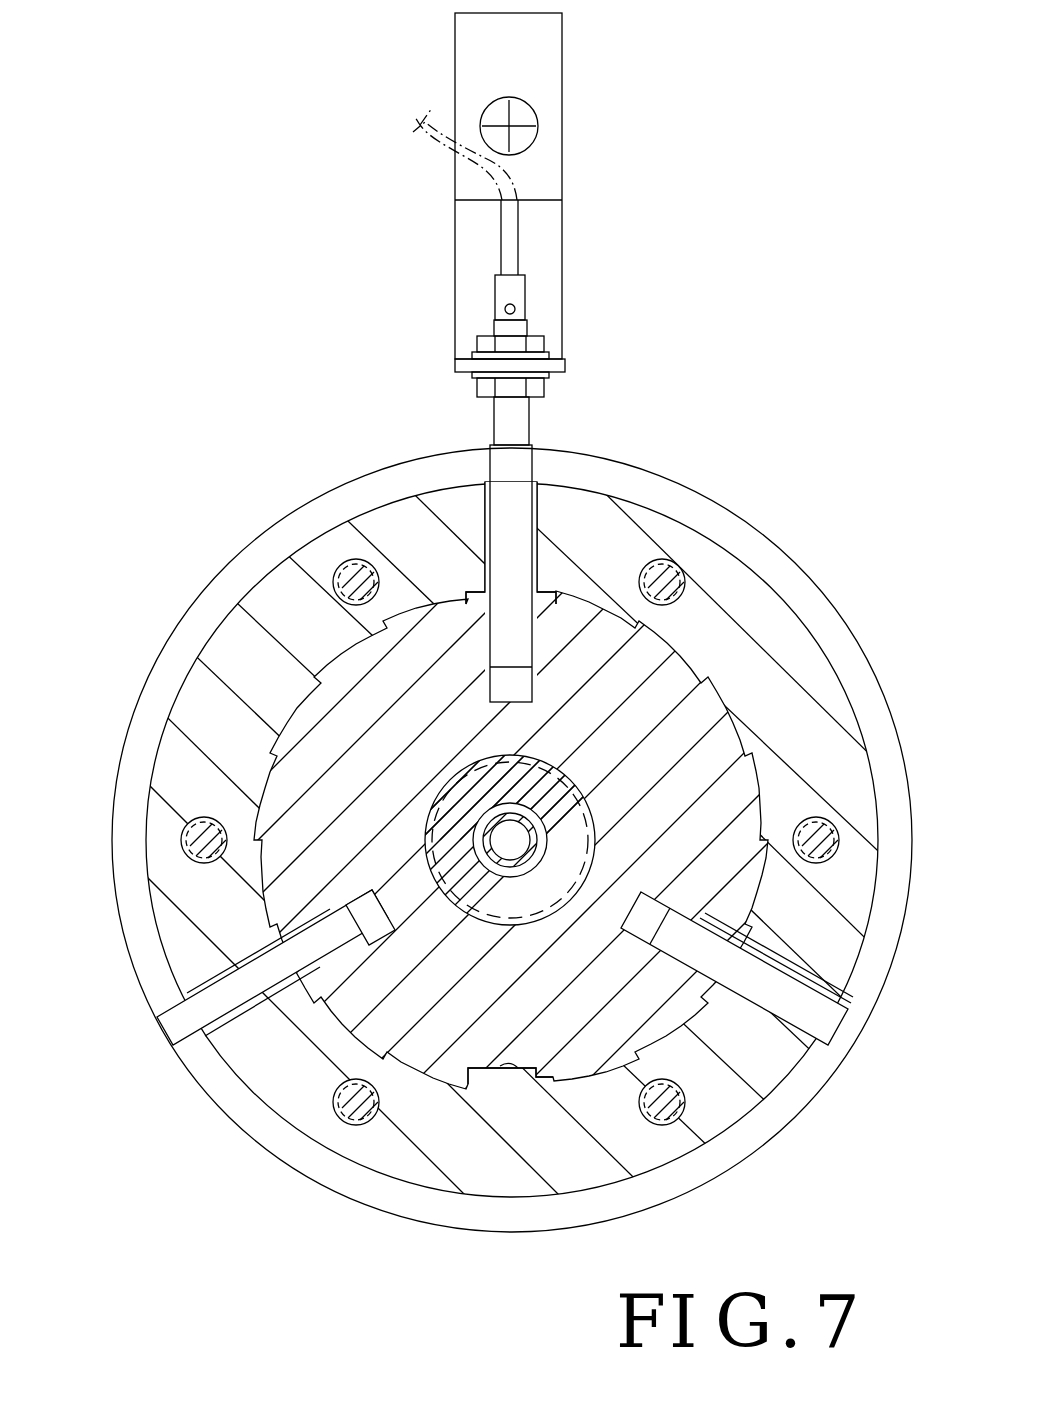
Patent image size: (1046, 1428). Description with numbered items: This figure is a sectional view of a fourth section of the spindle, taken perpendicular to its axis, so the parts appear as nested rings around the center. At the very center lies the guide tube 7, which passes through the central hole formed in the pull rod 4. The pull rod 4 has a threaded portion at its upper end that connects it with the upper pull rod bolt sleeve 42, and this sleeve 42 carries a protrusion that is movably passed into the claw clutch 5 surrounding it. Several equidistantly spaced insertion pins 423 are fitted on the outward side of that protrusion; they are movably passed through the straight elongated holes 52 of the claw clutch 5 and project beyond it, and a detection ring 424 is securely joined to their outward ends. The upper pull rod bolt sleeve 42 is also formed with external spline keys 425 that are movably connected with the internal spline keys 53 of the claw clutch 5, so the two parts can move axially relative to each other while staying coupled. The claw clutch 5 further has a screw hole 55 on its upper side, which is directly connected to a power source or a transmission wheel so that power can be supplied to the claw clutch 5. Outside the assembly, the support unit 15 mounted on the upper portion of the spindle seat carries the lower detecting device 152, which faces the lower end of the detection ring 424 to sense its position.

The support unit 15 is at (547, 245).
The lower detecting device 152 is at (517, 418).
The straight elongated holes 52 is at (490, 556).
The insertion pins 423 is at (517, 535).
The detection ring 424 is at (735, 530).
The upper pull rod bolt sleeve 42 is at (407, 713).
The claw clutch 5 is at (760, 615).
The pull rod 4 is at (430, 849).
The screw hole 55 is at (341, 1102).
The external spline keys 425 is at (422, 1088).
The internal spline keys 53 is at (500, 1066).
The guide tube 7 is at (520, 860).